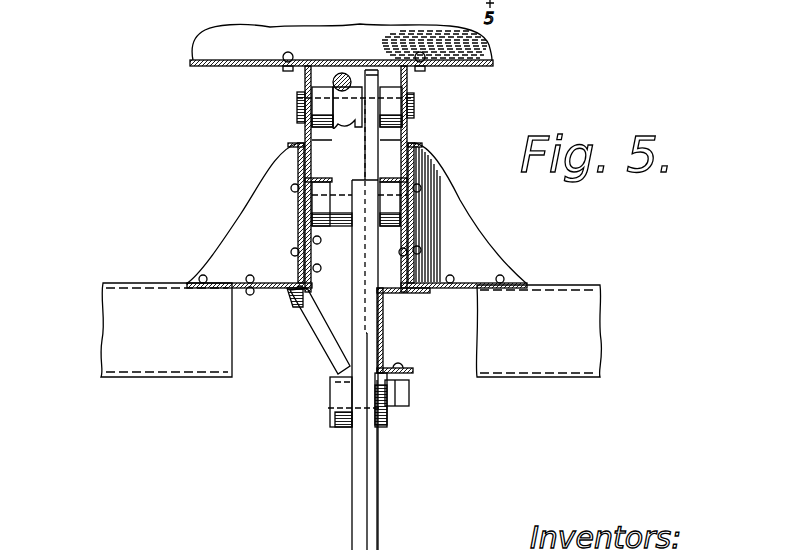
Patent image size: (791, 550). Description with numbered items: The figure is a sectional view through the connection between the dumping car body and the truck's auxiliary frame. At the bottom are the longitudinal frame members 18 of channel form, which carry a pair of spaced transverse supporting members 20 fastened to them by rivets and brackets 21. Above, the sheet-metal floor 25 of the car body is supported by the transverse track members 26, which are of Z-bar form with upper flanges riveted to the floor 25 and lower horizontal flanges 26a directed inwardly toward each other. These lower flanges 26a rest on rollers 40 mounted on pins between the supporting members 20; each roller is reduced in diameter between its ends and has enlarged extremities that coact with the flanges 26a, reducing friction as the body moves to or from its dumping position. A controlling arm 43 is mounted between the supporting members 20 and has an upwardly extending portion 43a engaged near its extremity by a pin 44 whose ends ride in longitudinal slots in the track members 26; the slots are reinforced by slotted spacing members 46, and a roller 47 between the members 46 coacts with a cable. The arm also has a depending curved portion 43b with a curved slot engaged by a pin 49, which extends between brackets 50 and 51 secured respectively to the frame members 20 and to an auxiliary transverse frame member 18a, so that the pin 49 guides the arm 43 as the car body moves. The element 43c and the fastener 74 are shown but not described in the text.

The longitudinal frame members 18 is at (103, 305).
The auxiliary transverse frame member 18a is at (383, 328).
The transverse supporting members 20 is at (305, 233).
The brackets 21 is at (200, 252).
The floor 25 is at (493, 66).
The transverse track members 26 is at (303, 72).
The lower horizontal flanges 26a is at (296, 147).
The rollers 40 is at (313, 200).
The controlling arms 43 is at (346, 481).
The upwardly extending portion 43a is at (372, 67).
The depending curved portion 43b is at (414, 465).
The bar attachment 43c is at (357, 273).
The pin 44 is at (297, 105).
The slotted spacing members 46 is at (333, 131).
The roller 47 is at (356, 152).
The pin 49 is at (403, 393).
The bracket 50 is at (320, 332).
The bracket 51 is at (383, 425).
The bolt 74 is at (337, 74).